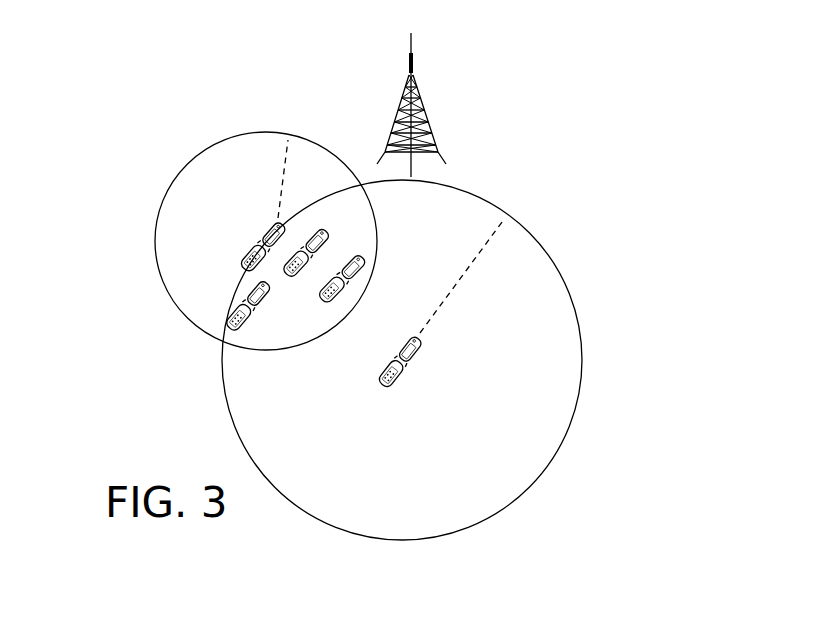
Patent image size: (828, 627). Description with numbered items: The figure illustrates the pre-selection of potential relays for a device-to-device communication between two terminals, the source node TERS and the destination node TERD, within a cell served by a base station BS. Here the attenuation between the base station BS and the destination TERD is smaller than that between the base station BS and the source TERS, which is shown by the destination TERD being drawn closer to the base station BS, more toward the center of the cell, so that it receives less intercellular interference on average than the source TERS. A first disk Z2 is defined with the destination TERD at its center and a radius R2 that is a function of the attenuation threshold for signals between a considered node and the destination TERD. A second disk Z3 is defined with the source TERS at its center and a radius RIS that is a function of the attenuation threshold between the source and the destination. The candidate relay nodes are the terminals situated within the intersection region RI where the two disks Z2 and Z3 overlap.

The first disk Z2 is at (210, 172).
The second disk Z3 is at (470, 507).
The base station BS is at (428, 110).
The destination node TERD is at (240, 258).
The intersection region RI is at (273, 313).
The source node TERS is at (420, 363).
The radius of the first disk R2 is at (288, 140).
The radius of the second disk RIS is at (460, 277).